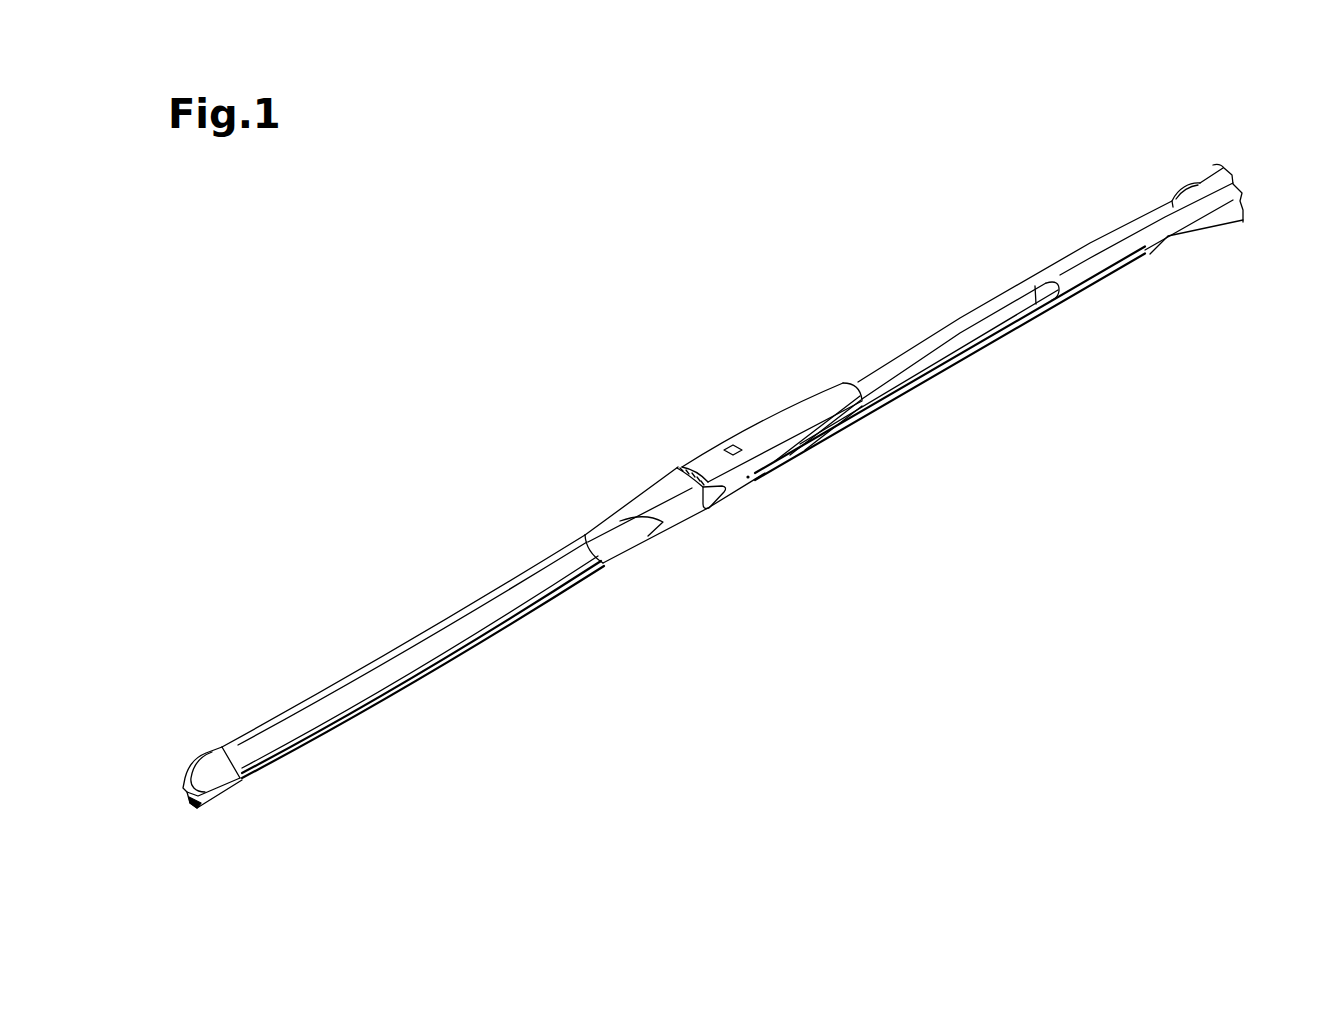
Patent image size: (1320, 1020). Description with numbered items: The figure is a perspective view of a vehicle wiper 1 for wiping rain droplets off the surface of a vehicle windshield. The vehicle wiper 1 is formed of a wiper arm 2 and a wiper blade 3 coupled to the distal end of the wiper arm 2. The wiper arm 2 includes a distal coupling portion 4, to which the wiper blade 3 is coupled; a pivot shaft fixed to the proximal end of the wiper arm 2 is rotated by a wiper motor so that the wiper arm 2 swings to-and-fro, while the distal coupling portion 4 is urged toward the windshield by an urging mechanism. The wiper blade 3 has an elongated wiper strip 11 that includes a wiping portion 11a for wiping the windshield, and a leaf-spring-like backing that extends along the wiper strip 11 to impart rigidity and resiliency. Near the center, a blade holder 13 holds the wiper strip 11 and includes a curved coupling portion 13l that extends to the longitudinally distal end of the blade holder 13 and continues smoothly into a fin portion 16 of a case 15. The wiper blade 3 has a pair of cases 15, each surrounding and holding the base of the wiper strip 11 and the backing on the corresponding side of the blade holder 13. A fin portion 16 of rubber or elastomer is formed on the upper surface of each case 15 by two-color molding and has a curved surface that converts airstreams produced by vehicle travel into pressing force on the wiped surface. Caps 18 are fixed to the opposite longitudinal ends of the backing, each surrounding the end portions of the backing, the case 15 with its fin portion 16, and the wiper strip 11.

The vehicle wiper 1 is at (600, 373).
The wiper arm 2 is at (975, 324).
The wiper blade 3 is at (470, 603).
The distal coupling portion 4 is at (742, 433).
The wiper strip 11 is at (299, 751).
The wiping portion 11a is at (214, 802).
The blade holder 13 is at (673, 470).
The curved coupling portion 13l is at (620, 525).
The case 15 is at (520, 618).
The fin portion 16 is at (522, 585).
The cap 18 is at (213, 762).